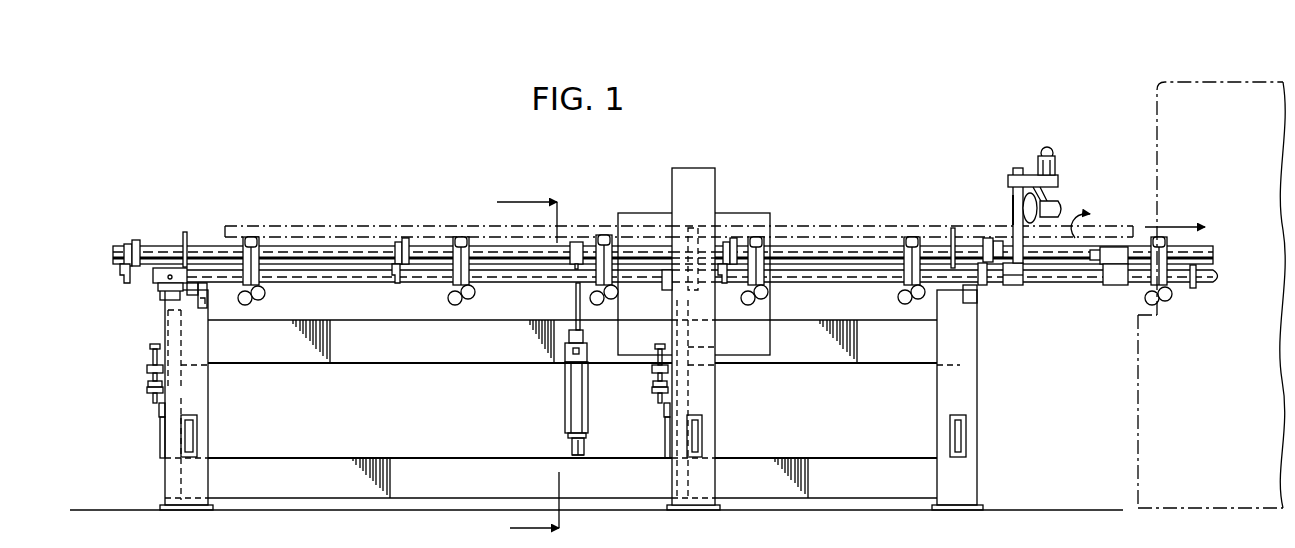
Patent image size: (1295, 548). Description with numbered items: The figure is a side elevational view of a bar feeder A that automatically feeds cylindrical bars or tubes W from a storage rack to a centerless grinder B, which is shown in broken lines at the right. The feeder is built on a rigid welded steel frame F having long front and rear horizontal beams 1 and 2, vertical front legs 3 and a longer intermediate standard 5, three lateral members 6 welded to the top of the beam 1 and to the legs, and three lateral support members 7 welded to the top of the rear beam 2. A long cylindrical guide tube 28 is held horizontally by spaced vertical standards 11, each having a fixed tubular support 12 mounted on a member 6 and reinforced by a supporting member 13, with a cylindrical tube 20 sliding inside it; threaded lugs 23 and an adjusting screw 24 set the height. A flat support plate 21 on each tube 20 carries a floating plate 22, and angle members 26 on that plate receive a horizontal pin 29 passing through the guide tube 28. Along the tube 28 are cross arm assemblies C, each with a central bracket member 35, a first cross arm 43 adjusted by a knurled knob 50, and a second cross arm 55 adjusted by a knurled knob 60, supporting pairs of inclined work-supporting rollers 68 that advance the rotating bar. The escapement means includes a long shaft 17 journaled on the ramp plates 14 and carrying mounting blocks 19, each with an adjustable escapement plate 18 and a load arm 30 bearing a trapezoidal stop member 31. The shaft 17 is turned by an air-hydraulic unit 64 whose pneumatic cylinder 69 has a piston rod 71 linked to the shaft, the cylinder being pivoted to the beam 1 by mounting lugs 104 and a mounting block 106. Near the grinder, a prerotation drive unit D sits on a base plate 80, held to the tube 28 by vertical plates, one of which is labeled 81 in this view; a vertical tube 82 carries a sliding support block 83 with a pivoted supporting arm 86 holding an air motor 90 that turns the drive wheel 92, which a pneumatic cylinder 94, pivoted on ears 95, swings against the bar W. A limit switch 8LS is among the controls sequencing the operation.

The front horizontal beam 1 is at (305, 500).
The rear horizontal beam 2 is at (413, 365).
The front legs 3 is at (210, 378).
The intermediate leg or standard 5 is at (715, 338).
The lateral horizontal beam members 6 is at (197, 430).
The lateral support members 7 is at (203, 290).
The vertical standards 11 is at (185, 340).
The fixed tubular vertical support 12 is at (185, 398).
The supporting member 13 is at (160, 445).
The ramp plates 14 is at (185, 232).
The escapement shaft 17 is at (305, 248).
The escapement plate 18 is at (142, 238).
The mounting blocks 19 is at (130, 246).
The cylindrical tube 20 is at (165, 305).
The support plate 21 is at (190, 290).
The floating rectangular plate 22 is at (180, 280).
The internally threaded lugs 23 is at (150, 392).
The adjusting screw 24 is at (158, 410).
The angle members 26 is at (155, 278).
The guide tube 28 is at (830, 270).
The horizontal pin 29 is at (160, 290).
The load arm 30 is at (124, 250).
The stop member 31 is at (122, 272).
The central bracket member 35 is at (262, 255).
The first cross arm 43 is at (895, 262).
The knurled knob 50 is at (453, 305).
The second cross arm 55 is at (468, 242).
The knurled knob 60 is at (468, 300).
The air-hydraulic unit 64 is at (566, 390).
The work-supporting rollers 68 is at (248, 237).
The pneumatic cylinder 69 is at (565, 410).
The piston rod 71 is at (565, 296).
The base plate 80 is at (1012, 280).
The base plate 81 is at (1008, 285).
The vertical cylindrical tube 82 is at (1013, 200).
The horizontal support block 83 is at (1013, 177).
The supporting arm 86 is at (1033, 200).
The air motor 90 is at (1062, 206).
The drive wheel 92 is at (1023, 208).
The pneumatic cylinder 94 is at (1050, 153).
The supporting ears 95 is at (1055, 168).
The mounting lugs 104 is at (568, 447).
The mounting block 106 is at (578, 458).
The bar feeder A is at (138, 186).
The centerless grinder B is at (1155, 90).
The cross arm assemblies C is at (268, 222).
The prerotation drive unit D is at (1022, 140).
The frame F is at (982, 395).
The cylindrical bars or tubes W is at (435, 227).
The limit switch 8LS is at (1110, 248).